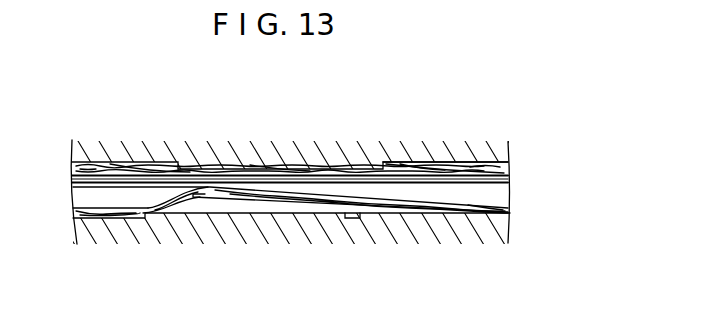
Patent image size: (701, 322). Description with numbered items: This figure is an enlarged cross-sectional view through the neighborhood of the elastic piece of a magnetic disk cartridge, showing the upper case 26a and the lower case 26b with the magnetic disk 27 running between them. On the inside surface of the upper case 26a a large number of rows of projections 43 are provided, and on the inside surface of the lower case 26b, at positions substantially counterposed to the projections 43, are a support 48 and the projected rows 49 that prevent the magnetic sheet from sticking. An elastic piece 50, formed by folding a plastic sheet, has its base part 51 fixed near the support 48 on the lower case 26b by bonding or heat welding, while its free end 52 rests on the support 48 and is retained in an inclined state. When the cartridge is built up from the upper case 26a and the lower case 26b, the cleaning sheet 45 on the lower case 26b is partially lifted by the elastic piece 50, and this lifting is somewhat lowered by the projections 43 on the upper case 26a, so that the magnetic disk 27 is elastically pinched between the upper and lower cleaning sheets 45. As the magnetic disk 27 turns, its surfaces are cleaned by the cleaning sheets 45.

The upper case 26a is at (509, 153).
The lower case 26b is at (511, 222).
The projections 43 is at (247, 175).
The magnetic disk 27 is at (421, 182).
The cleaning sheet 45 is at (488, 166).
The projected rows 49 is at (200, 213).
The free end 52 is at (253, 212).
The elastic piece 50 is at (318, 210).
The base part 51 is at (443, 214).
The support 48 is at (362, 218).